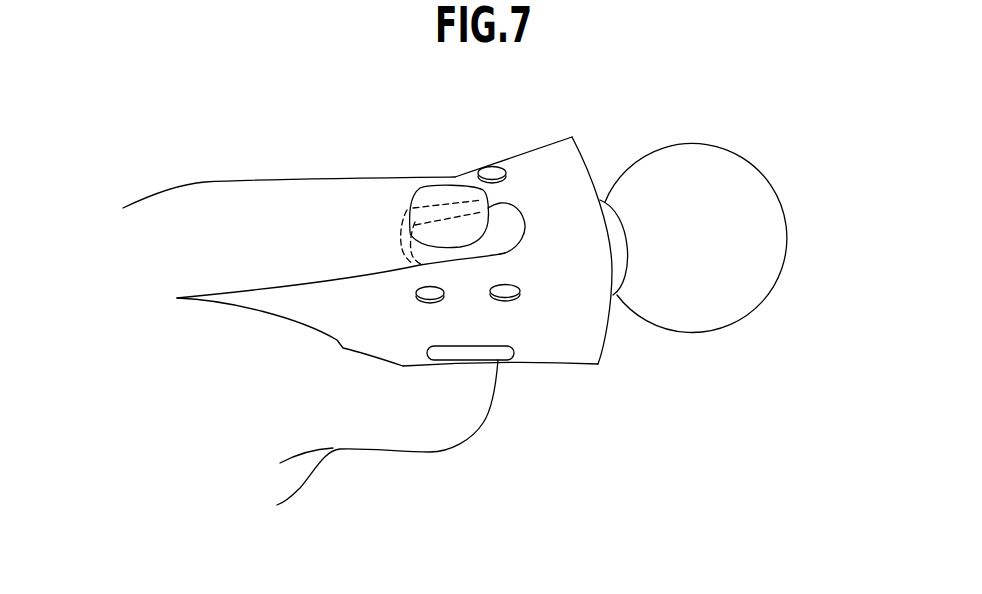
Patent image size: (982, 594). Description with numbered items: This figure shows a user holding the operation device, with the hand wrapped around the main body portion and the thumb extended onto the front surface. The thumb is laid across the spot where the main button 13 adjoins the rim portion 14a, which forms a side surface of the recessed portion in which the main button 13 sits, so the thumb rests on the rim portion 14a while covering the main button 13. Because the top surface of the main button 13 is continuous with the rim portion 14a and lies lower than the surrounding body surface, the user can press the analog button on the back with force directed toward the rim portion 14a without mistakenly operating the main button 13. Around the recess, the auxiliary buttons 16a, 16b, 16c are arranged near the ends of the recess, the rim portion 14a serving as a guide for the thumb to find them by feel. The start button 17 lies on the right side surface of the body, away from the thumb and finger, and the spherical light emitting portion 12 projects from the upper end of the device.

The light emitting portion 12 is at (773, 237).
The main button 13 is at (500, 228).
The rim portion 14a is at (400, 236).
The auxiliary button 16a is at (508, 298).
The auxiliary button 16b is at (488, 166).
The auxiliary button 16c is at (430, 300).
The start button 17 is at (458, 355).